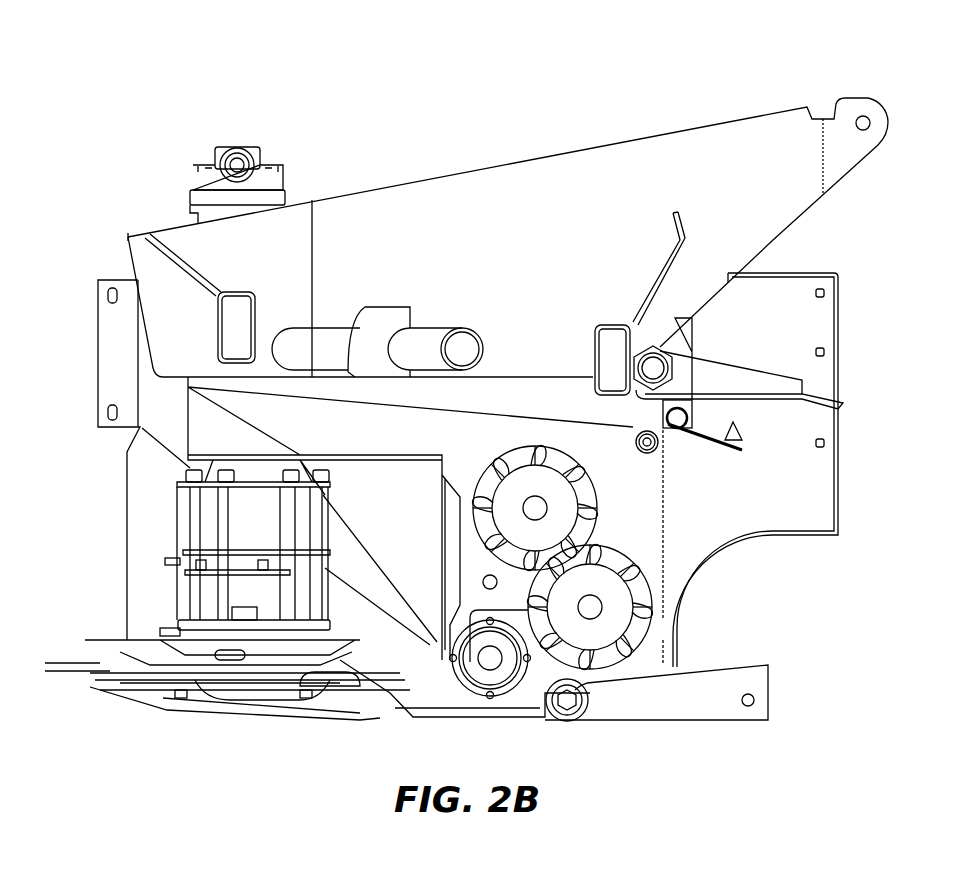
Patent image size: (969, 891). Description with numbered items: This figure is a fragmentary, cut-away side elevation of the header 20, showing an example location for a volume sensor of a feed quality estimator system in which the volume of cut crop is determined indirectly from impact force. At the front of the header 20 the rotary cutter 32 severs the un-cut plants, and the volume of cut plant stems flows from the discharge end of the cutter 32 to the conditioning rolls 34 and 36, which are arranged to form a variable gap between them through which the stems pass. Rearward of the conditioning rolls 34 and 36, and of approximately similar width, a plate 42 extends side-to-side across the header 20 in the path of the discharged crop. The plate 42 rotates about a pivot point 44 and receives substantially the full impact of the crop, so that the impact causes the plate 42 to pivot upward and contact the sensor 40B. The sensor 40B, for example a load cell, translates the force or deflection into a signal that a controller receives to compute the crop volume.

The header 20 is at (693, 85).
The rotary cutter 32 is at (150, 660).
The conditioning roll 34 is at (597, 493).
The conditioning roll 36 is at (647, 567).
The sensor 40B is at (740, 440).
The plate 42 is at (712, 443).
The pivot point 44 is at (692, 413).